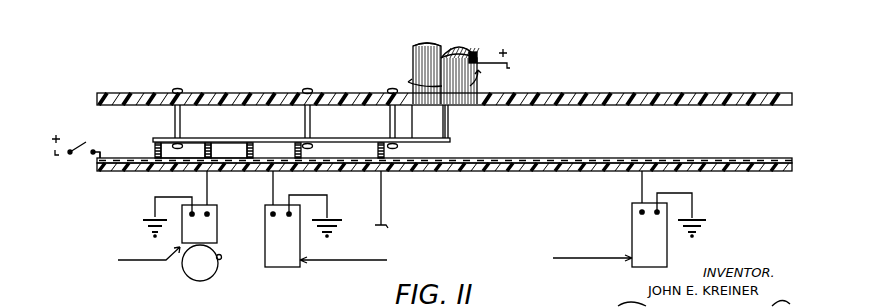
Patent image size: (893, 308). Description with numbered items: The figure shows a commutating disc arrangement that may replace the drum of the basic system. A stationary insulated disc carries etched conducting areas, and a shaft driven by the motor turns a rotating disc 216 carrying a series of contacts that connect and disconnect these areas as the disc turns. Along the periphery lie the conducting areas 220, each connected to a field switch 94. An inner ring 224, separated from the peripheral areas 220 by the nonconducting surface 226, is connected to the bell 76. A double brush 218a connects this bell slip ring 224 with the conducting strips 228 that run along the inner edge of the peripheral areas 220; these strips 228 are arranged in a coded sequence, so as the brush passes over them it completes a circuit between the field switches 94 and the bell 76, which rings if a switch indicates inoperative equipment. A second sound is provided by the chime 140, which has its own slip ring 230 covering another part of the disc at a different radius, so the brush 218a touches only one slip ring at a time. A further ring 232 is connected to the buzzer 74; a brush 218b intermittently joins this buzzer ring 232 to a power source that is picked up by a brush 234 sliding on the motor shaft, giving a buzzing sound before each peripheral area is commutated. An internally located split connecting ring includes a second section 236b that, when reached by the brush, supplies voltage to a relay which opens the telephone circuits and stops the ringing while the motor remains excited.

The field switch 94 is at (83, 146).
The rotating disc 216 is at (657, 92).
The brush 218a is at (245, 130).
The brush 218b is at (372, 138).
The conducting areas 220 is at (128, 155).
The inner ring 224 is at (217, 171).
The nonconducting surface 226 is at (482, 171).
The conducting strips 228 is at (156, 171).
The slip ring 230 is at (642, 158).
The ring 232 is at (266, 157).
The brush 234 is at (477, 54).
The second section 236b is at (376, 172).
The bell 76 is at (187, 272).
The buzzer 74 is at (290, 267).
The chime 140 is at (660, 251).